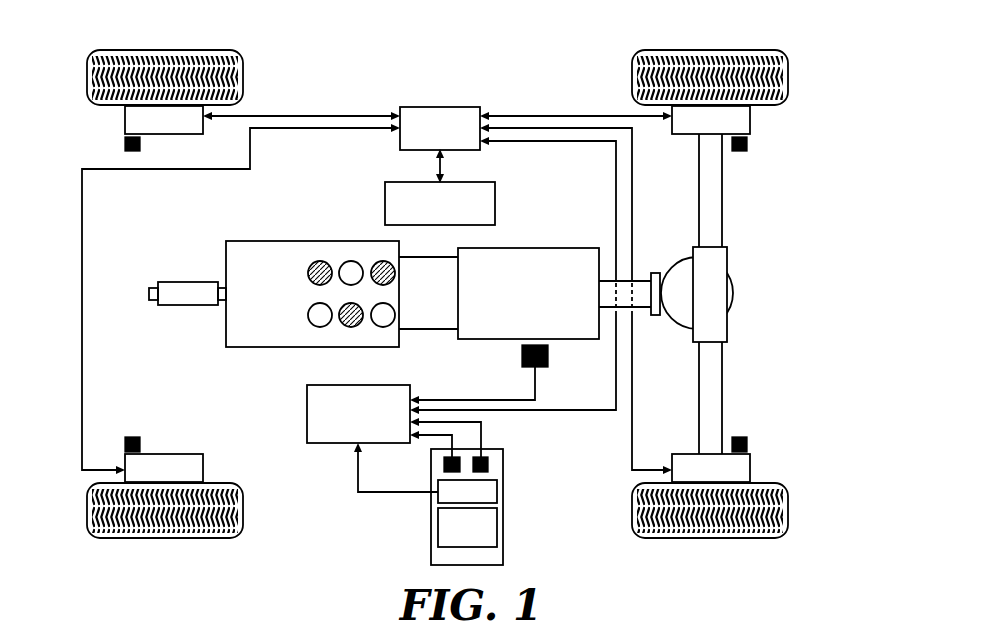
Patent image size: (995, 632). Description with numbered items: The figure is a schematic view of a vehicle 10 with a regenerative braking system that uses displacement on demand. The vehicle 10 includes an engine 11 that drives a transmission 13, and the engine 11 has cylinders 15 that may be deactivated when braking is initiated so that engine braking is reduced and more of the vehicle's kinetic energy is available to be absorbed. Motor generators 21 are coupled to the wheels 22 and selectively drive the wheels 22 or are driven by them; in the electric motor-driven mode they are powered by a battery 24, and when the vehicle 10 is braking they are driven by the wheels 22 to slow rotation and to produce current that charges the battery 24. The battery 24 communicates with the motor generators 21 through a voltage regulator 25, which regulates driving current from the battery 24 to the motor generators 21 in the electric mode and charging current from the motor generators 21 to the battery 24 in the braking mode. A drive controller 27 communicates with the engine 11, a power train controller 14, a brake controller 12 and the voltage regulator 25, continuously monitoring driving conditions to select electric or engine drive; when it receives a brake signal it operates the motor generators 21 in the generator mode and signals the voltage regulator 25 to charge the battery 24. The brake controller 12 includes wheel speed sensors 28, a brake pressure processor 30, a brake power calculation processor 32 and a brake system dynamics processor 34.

The vehicle 10 is at (568, 67).
The engine 11 is at (312, 264).
The brake controller 12 is at (473, 501).
The transmission 13 is at (537, 259).
The power train controller 14 is at (548, 355).
The cylinders 15 is at (315, 262).
The motor generators 21 is at (125, 116).
The wheels 22 is at (243, 80).
The battery 24 is at (495, 193).
The voltage regulator 25 is at (460, 107).
The drive controller 27 is at (327, 443).
The wheel speed sensors 28 is at (135, 151).
The brake pressure processor 30 is at (488, 463).
The brake power calculation processor 32 is at (444, 464).
The brake system dynamics processor 34 is at (497, 490).